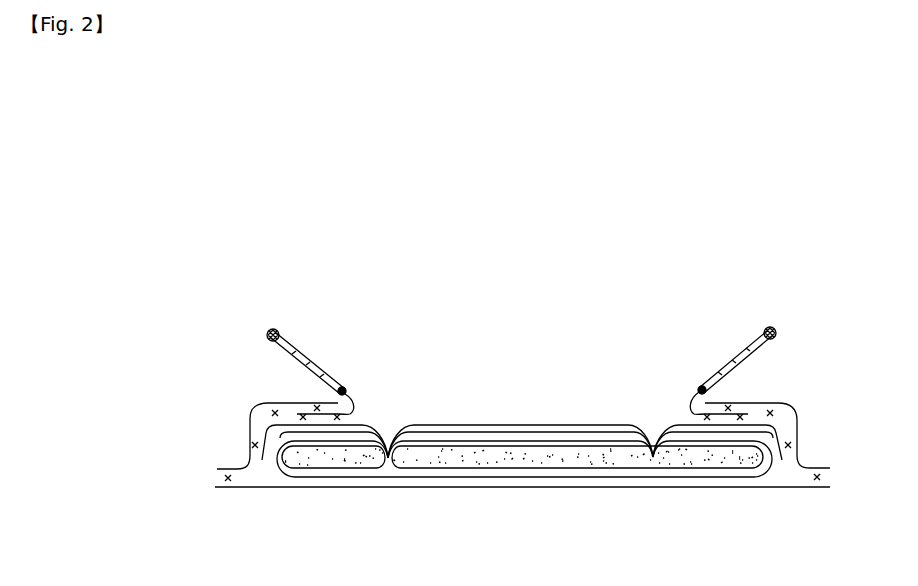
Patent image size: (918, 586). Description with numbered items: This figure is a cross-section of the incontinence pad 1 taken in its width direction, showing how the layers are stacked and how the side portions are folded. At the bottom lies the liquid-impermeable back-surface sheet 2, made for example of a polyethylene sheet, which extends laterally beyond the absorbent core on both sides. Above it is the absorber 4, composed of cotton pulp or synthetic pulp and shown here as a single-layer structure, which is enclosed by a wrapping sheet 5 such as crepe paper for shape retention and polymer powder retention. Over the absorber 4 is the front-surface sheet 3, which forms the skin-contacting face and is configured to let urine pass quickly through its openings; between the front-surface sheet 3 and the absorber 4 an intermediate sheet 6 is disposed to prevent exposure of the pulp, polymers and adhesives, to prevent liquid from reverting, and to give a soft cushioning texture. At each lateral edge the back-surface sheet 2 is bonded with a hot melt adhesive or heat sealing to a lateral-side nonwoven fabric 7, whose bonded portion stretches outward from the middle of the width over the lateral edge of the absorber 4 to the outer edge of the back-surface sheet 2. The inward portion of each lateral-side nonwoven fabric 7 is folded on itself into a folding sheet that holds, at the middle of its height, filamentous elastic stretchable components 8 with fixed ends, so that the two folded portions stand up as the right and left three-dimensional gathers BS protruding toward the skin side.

The incontinence pad 1 is at (642, 265).
The liquid-impermeable back-surface sheet 2 is at (622, 488).
The front-surface sheet 3 is at (503, 425).
The absorber 4 is at (500, 456).
The wrapping sheet 5 is at (431, 438).
The intermediate sheet 6 is at (569, 437).
The lateral-side nonwoven fabric 7 is at (250, 430).
The filamentous elastic stretchable component 8 is at (278, 331).
The three-dimensional gather BS is at (272, 308).